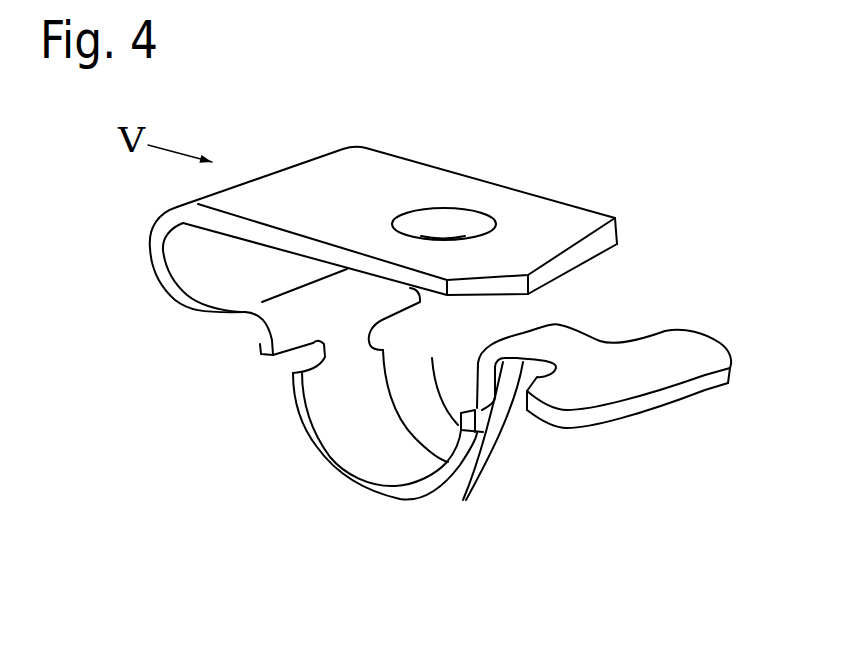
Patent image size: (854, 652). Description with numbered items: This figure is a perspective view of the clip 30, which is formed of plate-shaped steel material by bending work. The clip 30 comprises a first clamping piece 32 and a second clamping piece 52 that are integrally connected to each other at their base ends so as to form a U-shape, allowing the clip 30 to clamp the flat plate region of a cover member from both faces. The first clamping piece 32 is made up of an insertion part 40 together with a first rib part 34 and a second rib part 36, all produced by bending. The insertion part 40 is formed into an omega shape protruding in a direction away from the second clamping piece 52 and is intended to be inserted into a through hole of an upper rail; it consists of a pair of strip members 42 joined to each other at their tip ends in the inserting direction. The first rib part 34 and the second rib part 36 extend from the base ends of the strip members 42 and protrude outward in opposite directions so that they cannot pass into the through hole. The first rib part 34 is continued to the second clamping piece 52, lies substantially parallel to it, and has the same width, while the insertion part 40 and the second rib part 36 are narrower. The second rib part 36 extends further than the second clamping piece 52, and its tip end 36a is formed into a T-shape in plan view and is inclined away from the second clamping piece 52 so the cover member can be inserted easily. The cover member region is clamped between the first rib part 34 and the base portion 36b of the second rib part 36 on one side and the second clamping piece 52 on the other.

The clip 30 is at (633, 183).
The first clamping piece 32 is at (403, 555).
The first rib part 34 is at (245, 290).
The second rib part 36 is at (540, 418).
The tip end 36a is at (660, 373).
The base portion 36b is at (553, 326).
The insertion part 40 is at (333, 478).
The strip member 42 is at (355, 412).
The second clamping piece 52 is at (393, 190).